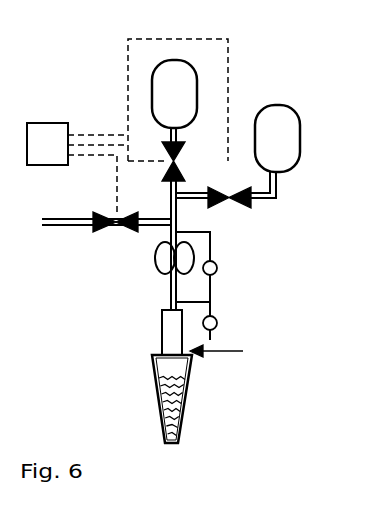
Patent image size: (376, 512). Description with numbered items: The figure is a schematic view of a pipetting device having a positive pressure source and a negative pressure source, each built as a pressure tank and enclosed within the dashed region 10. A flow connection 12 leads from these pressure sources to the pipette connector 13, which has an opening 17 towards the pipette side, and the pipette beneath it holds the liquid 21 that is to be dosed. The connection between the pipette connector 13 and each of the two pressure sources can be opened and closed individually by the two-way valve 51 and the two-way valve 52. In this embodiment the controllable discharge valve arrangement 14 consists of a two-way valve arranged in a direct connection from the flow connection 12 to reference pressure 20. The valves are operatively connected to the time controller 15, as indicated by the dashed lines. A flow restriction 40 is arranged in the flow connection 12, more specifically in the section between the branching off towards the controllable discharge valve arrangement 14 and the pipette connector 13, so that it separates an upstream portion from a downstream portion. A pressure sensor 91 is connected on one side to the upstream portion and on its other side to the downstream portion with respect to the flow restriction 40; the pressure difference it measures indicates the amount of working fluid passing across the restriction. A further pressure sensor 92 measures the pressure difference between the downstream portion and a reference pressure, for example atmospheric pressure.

The pressure supply unit 10 is at (187, 32).
The flow connection 12 is at (165, 292).
The pipette connector 13 is at (162, 343).
The controllable discharge valve arrangement 14 is at (113, 232).
The time controller 15 is at (52, 157).
The opening 17 is at (228, 353).
The reference pressure 20 is at (27, 239).
The liquid 21 is at (186, 406).
The flow restriction 40 is at (156, 264).
The two-way valve 51 is at (167, 175).
The two-way valve 52 is at (229, 206).
The pressure sensor 91 is at (217, 268).
The pressure sensor 92 is at (217, 323).